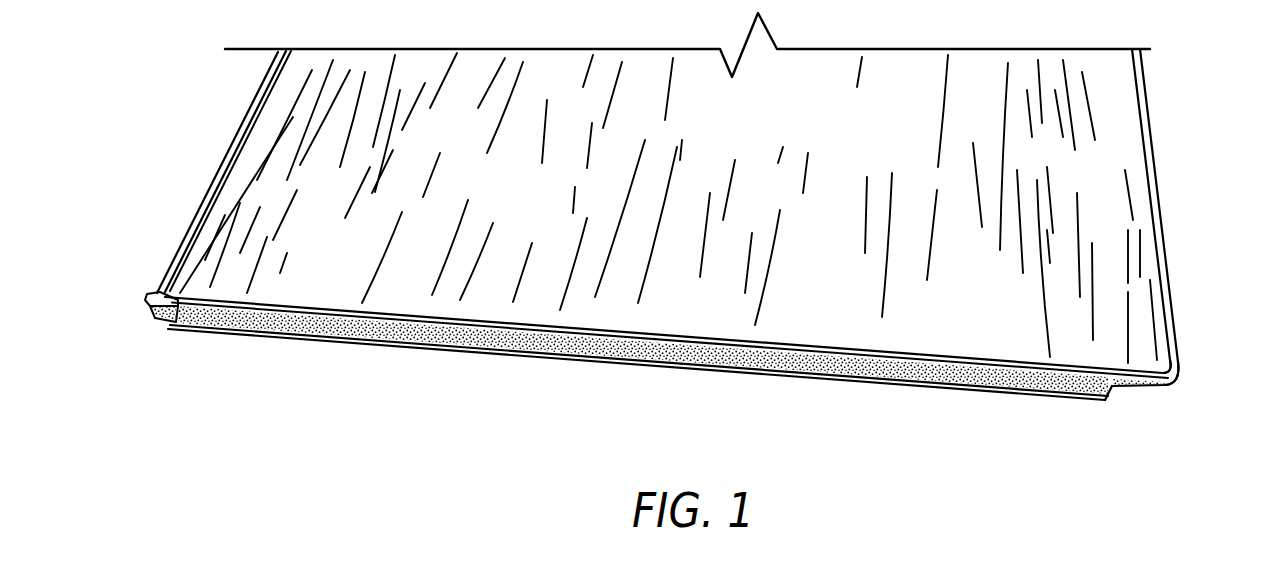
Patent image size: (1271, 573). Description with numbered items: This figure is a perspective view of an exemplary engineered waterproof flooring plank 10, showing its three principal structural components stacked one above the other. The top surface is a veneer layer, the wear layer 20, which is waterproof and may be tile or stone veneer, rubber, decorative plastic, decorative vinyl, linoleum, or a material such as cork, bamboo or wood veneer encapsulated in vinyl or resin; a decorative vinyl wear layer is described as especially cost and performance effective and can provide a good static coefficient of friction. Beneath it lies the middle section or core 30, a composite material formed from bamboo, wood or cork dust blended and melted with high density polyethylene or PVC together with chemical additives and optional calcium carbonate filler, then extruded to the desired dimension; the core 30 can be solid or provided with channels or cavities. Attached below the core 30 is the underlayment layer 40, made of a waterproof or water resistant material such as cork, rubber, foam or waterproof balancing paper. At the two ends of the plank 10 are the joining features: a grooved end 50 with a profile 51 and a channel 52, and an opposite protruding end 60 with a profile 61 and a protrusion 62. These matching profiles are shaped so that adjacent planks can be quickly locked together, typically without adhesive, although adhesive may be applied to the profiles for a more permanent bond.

The flooring plank 10 is at (198, 134).
The wear layer 20 is at (1130, 153).
The core 30 is at (787, 355).
The underlayment layer 40 is at (483, 353).
The grooved end 50 is at (170, 252).
The profile 51 is at (161, 318).
The channel 52 is at (150, 300).
The protruding end 60 is at (1168, 387).
The profile 61 is at (1115, 388).
The protrusion 62 is at (1173, 350).